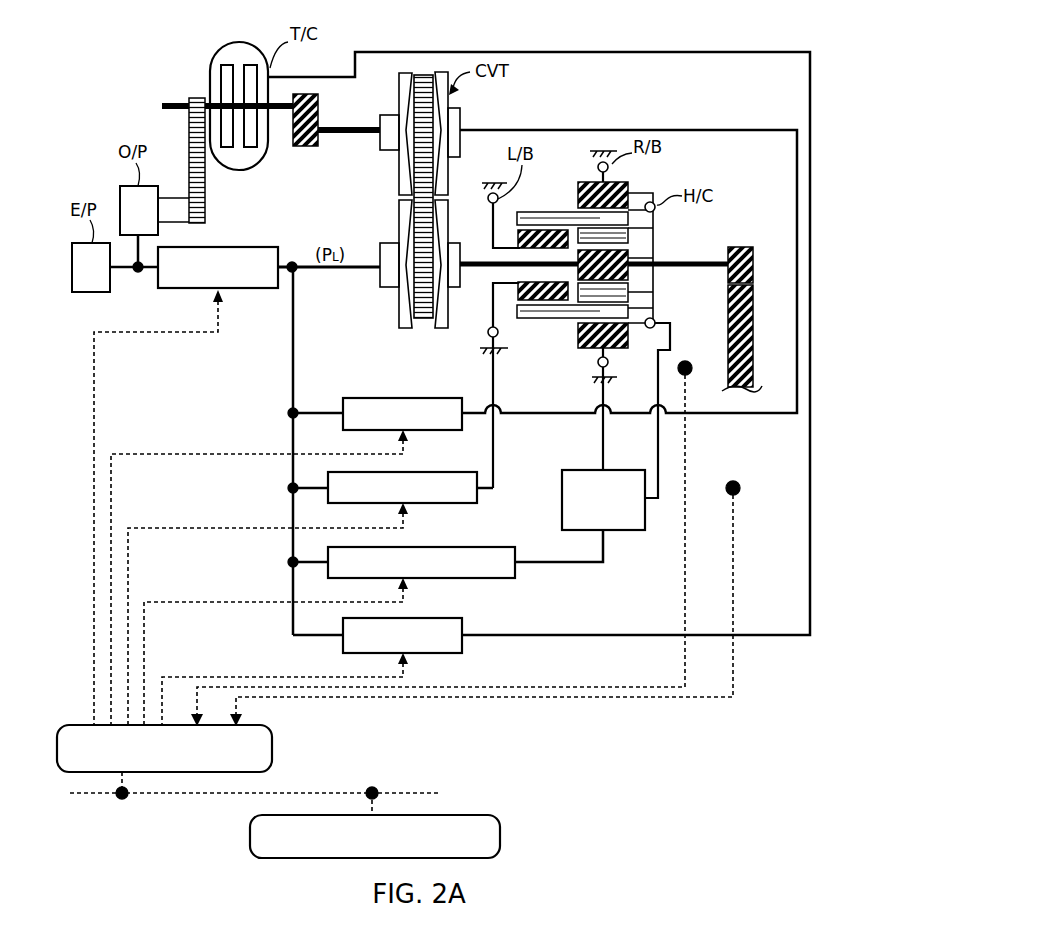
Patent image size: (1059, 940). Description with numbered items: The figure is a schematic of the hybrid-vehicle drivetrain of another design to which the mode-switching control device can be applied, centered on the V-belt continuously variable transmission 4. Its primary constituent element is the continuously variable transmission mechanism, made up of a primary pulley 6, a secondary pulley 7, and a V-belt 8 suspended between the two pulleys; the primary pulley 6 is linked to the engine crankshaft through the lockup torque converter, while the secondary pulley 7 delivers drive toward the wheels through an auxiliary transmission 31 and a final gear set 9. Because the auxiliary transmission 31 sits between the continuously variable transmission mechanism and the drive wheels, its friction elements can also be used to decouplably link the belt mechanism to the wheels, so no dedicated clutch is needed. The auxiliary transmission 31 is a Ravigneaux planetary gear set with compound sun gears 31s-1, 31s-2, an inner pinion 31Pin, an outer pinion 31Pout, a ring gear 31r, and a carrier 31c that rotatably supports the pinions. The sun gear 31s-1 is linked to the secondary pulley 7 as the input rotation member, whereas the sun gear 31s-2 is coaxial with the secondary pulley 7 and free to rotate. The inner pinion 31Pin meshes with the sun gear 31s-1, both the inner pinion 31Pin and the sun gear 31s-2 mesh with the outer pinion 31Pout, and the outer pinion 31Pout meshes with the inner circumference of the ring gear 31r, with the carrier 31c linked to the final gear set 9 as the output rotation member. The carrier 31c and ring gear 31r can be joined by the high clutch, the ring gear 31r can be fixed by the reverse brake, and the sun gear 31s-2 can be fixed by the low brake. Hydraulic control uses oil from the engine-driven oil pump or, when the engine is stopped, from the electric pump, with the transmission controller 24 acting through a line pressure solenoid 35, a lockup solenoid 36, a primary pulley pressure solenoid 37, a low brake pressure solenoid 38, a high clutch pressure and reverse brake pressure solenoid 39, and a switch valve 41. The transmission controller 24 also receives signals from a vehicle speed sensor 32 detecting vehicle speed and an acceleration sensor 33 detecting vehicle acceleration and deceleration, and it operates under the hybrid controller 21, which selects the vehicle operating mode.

The V-belt continuously variable transmission 4 is at (720, 36).
The primary pulley 6 is at (458, 111).
The secondary pulley 7 is at (382, 277).
The V-belt 8 is at (412, 193).
The final gear set 9 is at (753, 270).
The hybrid controller 21 is at (250, 834).
The transmission controller 24 is at (273, 747).
The auxiliary transmission 31 is at (547, 209).
The ring gear 31r is at (628, 190).
The inner pinion 31Pin is at (630, 221).
The sun gear 31s-1 is at (630, 250).
The carrier 31c is at (653, 283).
The sun gear 31s-2 is at (518, 292).
The outer pinion 31Pout is at (540, 320).
The vehicle speed sensor 32 is at (689, 360).
The acceleration sensor 33 is at (741, 488).
The line pressure solenoid 35 is at (268, 247).
The lockup solenoid 36 is at (450, 618).
The primary pulley pressure solenoid 37 is at (422, 398).
The low brake pressure solenoid 38 is at (440, 472).
The high clutch pressure & reverse brake pressure solenoid 39 is at (505, 547).
The switch valve 41 is at (567, 470).